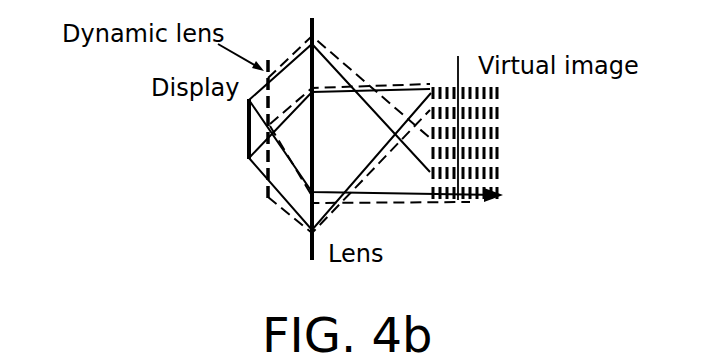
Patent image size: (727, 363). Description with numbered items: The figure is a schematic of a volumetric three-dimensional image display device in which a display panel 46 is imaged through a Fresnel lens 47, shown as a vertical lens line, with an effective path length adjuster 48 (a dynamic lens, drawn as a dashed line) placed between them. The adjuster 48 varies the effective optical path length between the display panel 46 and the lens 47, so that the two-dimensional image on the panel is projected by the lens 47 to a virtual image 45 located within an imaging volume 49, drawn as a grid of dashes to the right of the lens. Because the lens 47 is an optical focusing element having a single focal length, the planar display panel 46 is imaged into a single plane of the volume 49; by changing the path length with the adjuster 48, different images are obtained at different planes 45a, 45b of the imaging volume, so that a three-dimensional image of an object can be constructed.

The virtual image 45 is at (458, 56).
The plane of the imaging volume 45a is at (462, 200).
The plane of the imaging volume 45b is at (477, 200).
The display panel 46 is at (247, 130).
The Fresnel lens 47 is at (310, 27).
The effective path length adjuster 48 is at (266, 193).
The imaging volume 49 is at (494, 145).